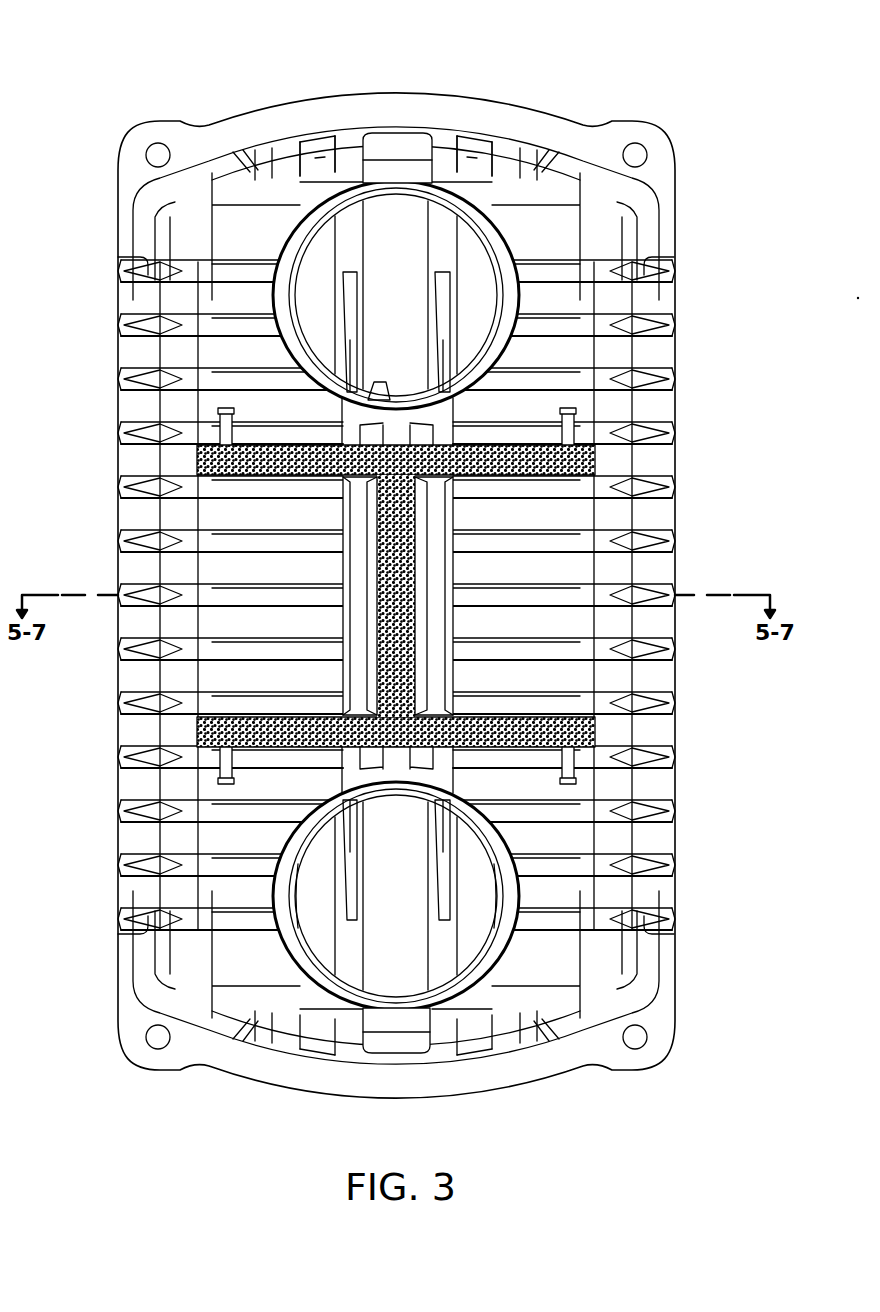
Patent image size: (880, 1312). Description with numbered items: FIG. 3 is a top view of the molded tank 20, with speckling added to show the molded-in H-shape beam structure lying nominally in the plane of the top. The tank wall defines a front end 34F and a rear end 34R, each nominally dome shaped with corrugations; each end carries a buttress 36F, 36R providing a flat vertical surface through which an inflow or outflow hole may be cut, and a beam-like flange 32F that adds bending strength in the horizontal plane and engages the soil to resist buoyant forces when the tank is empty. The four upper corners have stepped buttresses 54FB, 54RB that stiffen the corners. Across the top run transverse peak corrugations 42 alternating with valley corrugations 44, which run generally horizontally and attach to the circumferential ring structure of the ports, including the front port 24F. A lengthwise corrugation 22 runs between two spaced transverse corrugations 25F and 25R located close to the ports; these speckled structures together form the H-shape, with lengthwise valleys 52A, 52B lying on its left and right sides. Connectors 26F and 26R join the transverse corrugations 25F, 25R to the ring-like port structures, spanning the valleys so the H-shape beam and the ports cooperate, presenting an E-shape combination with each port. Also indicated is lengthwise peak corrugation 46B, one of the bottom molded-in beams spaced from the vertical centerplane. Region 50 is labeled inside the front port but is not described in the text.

The tank 20 is at (95, 925).
The lengthwise corrugation 22 is at (409, 575).
The front port 24F is at (333, 190).
The front transverse corrugation 25F is at (545, 473).
The rear transverse corrugation 25R is at (510, 739).
The front connectors 26F is at (397, 430).
The rear connectors 26R is at (400, 770).
The front end flange 32F is at (467, 100).
The front end 34F is at (386, 50).
The rear end 34R is at (360, 1100).
The front buttress 36F is at (386, 133).
The rear buttress 36R is at (410, 1052).
The peak corrugations 42 is at (620, 487).
The valley corrugations 44 is at (616, 568).
The lengthwise peak corrugation 46B is at (350, 950).
The bore interior 50 is at (405, 285).
The left lengthwise valley 52A is at (358, 676).
The right lengthwise valley 52B is at (430, 676).
The front corner buttress 54FB is at (150, 224).
The rear corner buttress 54RB is at (150, 988).